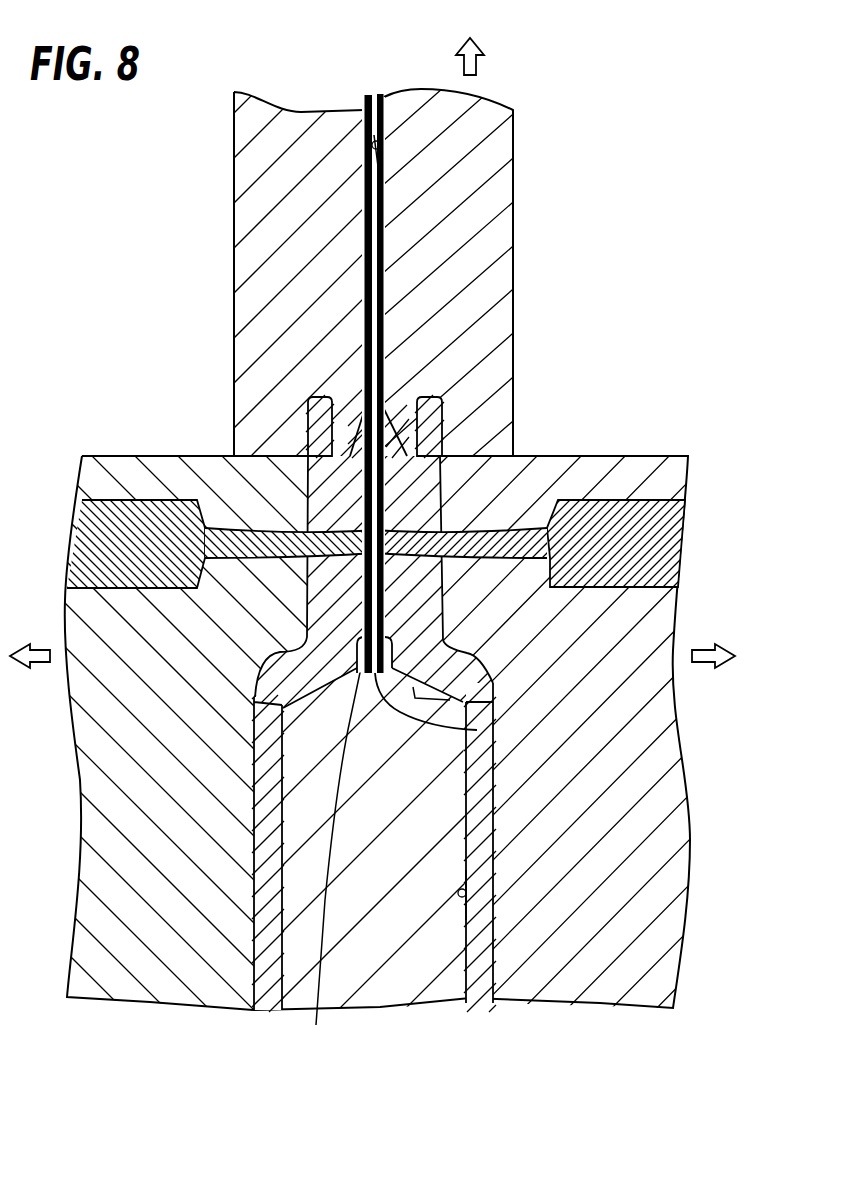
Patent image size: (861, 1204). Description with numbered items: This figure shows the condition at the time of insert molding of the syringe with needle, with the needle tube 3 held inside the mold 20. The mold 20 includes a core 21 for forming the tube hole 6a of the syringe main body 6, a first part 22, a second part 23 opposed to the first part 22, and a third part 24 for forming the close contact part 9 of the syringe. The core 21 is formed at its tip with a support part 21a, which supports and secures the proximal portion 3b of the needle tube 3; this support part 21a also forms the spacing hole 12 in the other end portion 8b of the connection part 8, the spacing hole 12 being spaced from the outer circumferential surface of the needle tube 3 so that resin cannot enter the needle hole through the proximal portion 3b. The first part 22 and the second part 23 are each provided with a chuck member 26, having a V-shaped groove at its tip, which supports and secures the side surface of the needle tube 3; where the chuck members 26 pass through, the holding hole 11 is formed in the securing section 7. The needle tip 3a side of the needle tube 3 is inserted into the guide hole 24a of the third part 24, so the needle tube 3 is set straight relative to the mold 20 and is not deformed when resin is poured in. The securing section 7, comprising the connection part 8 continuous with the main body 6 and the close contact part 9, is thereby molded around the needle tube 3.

The mold 20 is at (191, 166).
The third part 24 is at (512, 250).
The guide hole 24a is at (380, 138).
The needle tube 3 is at (373, 325).
The needle tip 3a is at (378, 167).
The proximal portion 3b is at (477, 730).
The securing section 7 is at (439, 433).
The close contact part 9 is at (442, 403).
The connection part 8 is at (440, 493).
The other end portion 8b is at (396, 672).
The chuck member 26 is at (78, 520).
The holding hole 11 is at (400, 568).
The spacing hole 12 is at (440, 655).
The main body 6 is at (490, 836).
The tube hole 6a is at (466, 896).
The first part 22 is at (678, 955).
The second part 23 is at (83, 923).
The core 21 is at (421, 990).
The support part 21a is at (329, 857).